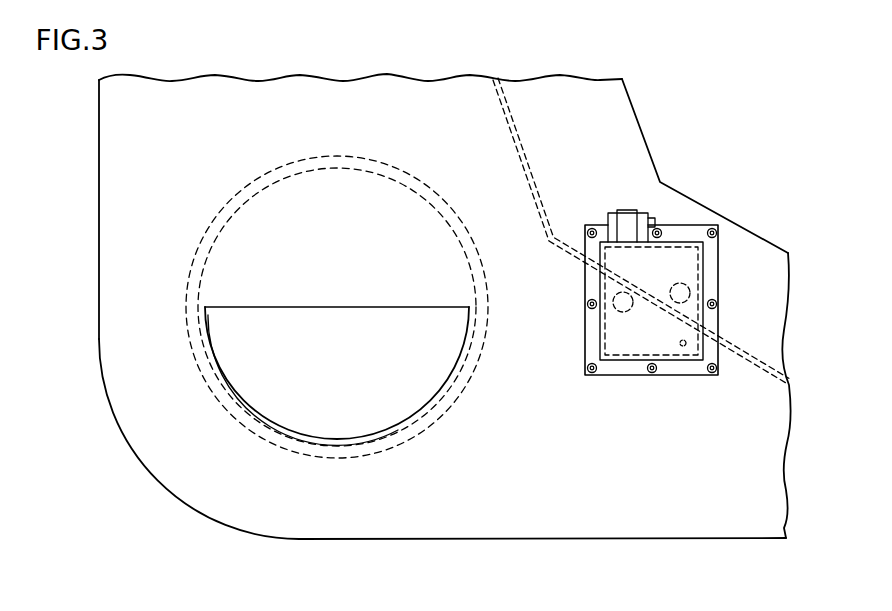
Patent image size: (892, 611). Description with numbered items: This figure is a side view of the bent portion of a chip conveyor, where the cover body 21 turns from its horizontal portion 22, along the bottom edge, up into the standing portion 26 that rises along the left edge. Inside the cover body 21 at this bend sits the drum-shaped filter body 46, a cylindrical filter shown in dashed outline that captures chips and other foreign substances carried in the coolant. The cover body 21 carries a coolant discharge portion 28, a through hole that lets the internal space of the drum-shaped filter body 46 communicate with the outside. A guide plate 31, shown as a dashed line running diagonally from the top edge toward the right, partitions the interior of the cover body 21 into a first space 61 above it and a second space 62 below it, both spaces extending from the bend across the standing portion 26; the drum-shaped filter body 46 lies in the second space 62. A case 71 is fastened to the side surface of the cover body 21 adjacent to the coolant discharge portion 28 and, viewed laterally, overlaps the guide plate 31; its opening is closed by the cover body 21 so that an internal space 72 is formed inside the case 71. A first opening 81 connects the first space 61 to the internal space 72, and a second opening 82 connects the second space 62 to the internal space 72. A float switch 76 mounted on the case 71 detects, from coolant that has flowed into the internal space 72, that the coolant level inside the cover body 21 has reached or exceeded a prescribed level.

The cover body 21 is at (634, 76).
The horizontal portion 22 is at (746, 540).
The standing portion 26 is at (99, 113).
The coolant discharge portion 28 is at (252, 405).
The guide plate 31 is at (518, 137).
The drum-shaped filter body 46 is at (338, 156).
The first space 61 is at (620, 150).
The second space 62 is at (483, 165).
The case 71 is at (720, 245).
The internal space 72 is at (668, 263).
The float switch 76 is at (627, 213).
The first opening 81 is at (700, 313).
The second opening 82 is at (625, 300).